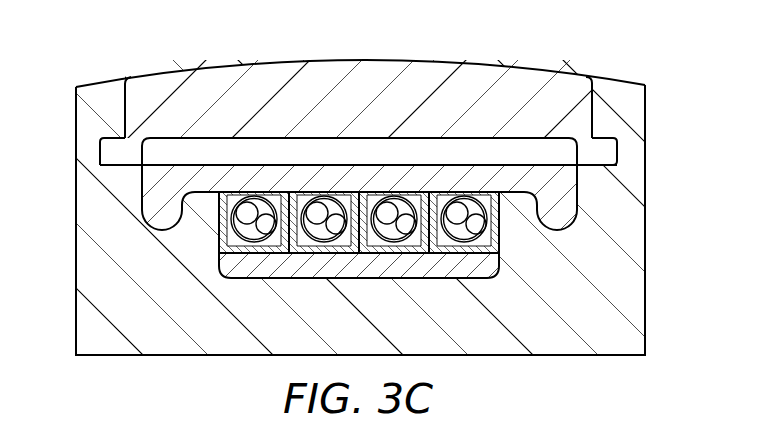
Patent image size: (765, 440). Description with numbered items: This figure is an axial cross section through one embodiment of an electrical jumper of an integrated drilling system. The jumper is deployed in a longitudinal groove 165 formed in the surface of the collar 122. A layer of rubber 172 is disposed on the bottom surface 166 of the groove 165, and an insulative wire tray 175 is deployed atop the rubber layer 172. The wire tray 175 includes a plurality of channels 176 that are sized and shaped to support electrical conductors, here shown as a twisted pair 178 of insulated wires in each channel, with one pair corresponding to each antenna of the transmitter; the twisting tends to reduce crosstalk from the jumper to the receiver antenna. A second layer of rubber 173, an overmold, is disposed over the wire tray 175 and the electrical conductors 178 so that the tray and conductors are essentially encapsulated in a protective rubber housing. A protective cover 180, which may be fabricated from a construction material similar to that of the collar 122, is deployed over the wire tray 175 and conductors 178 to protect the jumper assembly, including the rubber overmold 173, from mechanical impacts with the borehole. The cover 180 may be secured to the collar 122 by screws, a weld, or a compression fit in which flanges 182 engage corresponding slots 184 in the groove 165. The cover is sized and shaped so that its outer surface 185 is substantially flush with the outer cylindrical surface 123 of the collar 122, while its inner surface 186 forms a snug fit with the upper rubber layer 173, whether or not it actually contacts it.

The collar 122 is at (391, 334).
The outer cylindrical surface 123 is at (103, 82).
The longitudinal groove 165 is at (494, 256).
The bottom surface 166 is at (418, 275).
The layer of rubber 172 is at (292, 255).
The second layer of rubber 173 is at (337, 192).
The insulative wire tray 175 is at (373, 191).
The channels 176 is at (237, 236).
The twisted pair 178 is at (273, 197).
The protective cover 180 is at (428, 87).
The flanges 182 is at (598, 152).
The slots 184 is at (607, 138).
The outer surface 185 is at (487, 63).
The inner surface 186 is at (400, 137).